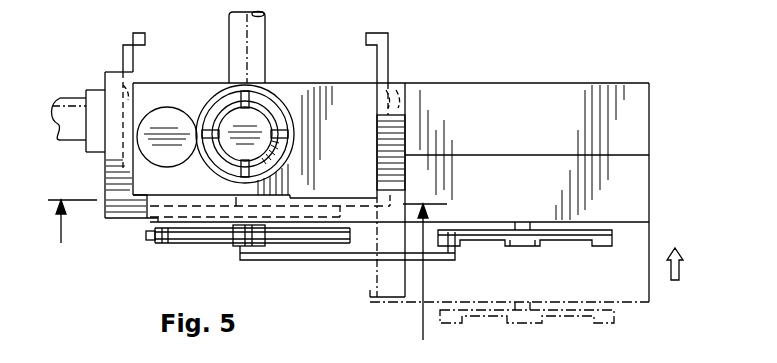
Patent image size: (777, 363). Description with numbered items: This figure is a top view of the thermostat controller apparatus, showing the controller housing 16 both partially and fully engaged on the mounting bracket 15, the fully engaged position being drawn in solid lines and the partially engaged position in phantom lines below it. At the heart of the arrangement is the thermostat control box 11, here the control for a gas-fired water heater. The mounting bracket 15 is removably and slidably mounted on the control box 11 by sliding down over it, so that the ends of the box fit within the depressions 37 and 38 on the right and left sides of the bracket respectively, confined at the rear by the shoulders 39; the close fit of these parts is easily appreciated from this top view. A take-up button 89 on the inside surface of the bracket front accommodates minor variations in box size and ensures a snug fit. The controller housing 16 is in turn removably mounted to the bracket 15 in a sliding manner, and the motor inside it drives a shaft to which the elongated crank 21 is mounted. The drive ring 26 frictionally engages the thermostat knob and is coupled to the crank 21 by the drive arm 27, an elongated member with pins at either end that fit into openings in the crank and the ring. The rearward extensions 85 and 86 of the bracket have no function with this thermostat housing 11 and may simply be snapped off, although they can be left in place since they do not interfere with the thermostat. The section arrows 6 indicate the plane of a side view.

The section line 6- 6 is at (247, 279).
The thermostat control box 11 is at (295, 97).
The mounting bracket 15 is at (395, 88).
The controller housing 16 is at (553, 85).
The crank 21 is at (563, 238).
The drive ring 26 is at (178, 246).
The drive arm 27 is at (328, 262).
The depression 37 is at (376, 97).
The depression 38 is at (132, 100).
The shoulders 39 is at (106, 80).
The rearward extension 85 is at (389, 56).
The rearward extension 86 is at (123, 50).
The take-up button 89 is at (236, 197).